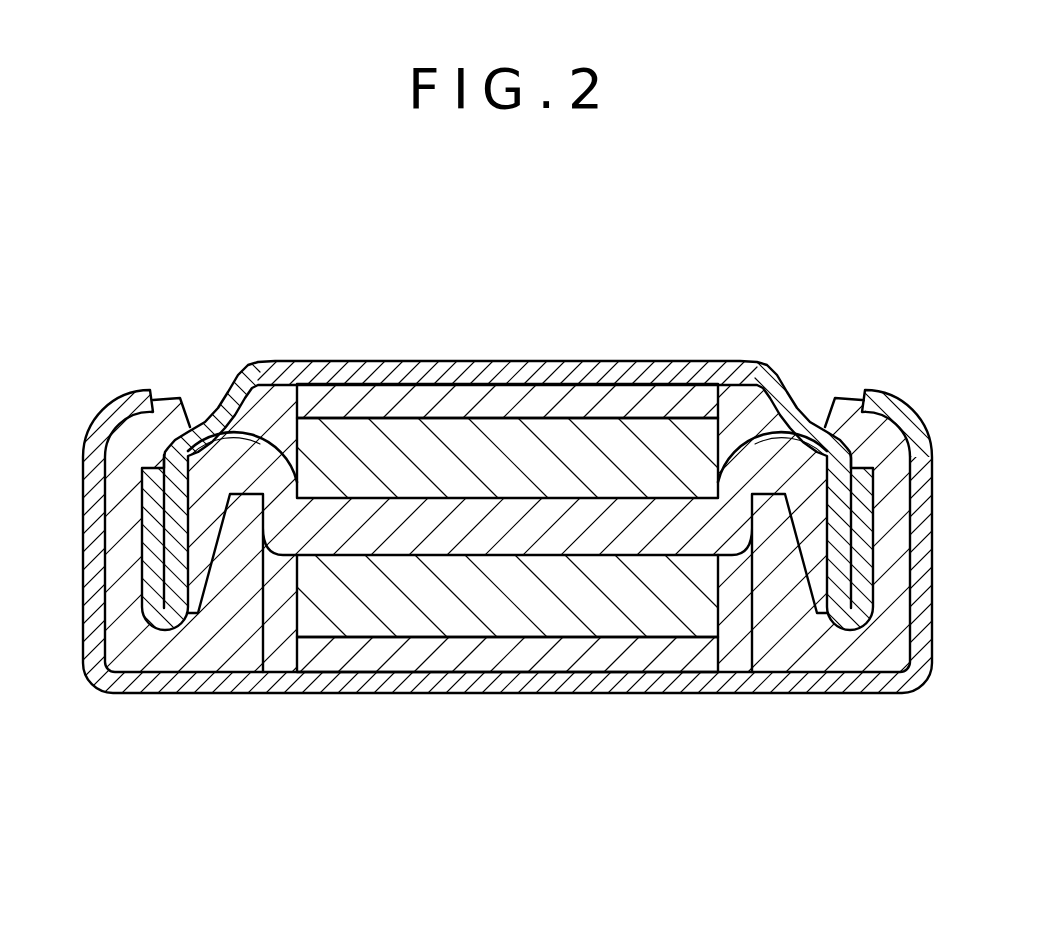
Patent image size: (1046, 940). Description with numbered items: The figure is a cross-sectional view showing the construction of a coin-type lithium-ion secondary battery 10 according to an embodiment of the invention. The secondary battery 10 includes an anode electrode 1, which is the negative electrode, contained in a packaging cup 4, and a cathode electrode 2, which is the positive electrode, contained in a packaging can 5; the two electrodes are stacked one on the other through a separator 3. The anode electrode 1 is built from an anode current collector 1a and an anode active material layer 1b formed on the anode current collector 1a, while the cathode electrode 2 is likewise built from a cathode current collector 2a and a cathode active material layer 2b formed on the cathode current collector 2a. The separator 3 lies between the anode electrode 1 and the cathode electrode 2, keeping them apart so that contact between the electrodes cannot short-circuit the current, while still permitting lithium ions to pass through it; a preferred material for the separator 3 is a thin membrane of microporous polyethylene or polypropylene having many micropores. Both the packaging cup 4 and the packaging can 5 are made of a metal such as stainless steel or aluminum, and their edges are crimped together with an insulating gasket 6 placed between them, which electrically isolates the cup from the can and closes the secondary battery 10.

The lithium-ion secondary battery 10 is at (483, 275).
The anode electrode 1 is at (507, 371).
The anode current collector 1a is at (641, 398).
The anode active material layer 1b is at (594, 437).
The cathode electrode 2 is at (507, 684).
The cathode current collector 2a is at (493, 655).
The cathode active material layer 2b is at (545, 612).
The separator 3 is at (792, 458).
The packaging cup 4 is at (313, 378).
The packaging can 5 is at (298, 683).
The insulating gasket 6 is at (207, 652).